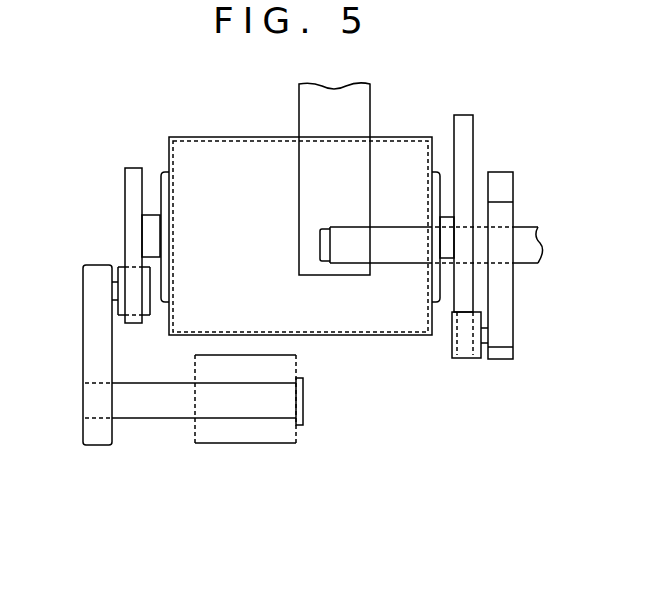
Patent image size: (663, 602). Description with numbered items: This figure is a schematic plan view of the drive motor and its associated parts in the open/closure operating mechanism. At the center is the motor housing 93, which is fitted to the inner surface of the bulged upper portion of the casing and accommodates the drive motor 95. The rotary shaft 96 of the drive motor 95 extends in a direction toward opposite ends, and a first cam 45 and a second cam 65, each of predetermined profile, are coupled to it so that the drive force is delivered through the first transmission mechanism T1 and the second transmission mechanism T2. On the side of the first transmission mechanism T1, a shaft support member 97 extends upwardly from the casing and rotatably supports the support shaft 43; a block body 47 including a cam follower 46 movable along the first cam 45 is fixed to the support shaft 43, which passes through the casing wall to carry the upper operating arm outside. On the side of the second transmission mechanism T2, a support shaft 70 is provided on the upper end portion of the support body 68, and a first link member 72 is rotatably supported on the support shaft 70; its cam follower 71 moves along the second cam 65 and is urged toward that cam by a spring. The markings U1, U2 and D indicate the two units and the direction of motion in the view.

The support shaft 43 is at (527, 253).
The first cam 45 is at (465, 137).
The cam follower 46 is at (467, 358).
The block body 47 is at (503, 318).
The second cam 65 is at (132, 190).
The support body 68 is at (248, 435).
The support shaft 70 is at (157, 408).
The cam follower 71 is at (148, 316).
The first link member 72 is at (98, 315).
The motor housing 93 is at (247, 137).
The drive motor 95 is at (343, 333).
The rotary shaft 96 is at (448, 222).
The shaft support member 97 is at (360, 112).
The first transmission mechanism T1 is at (525, 168).
The second transmission mechanism T2 is at (112, 148).
The first unit U1 is at (470, 104).
The second unit U2 is at (138, 157).
The direction D is at (406, 355).